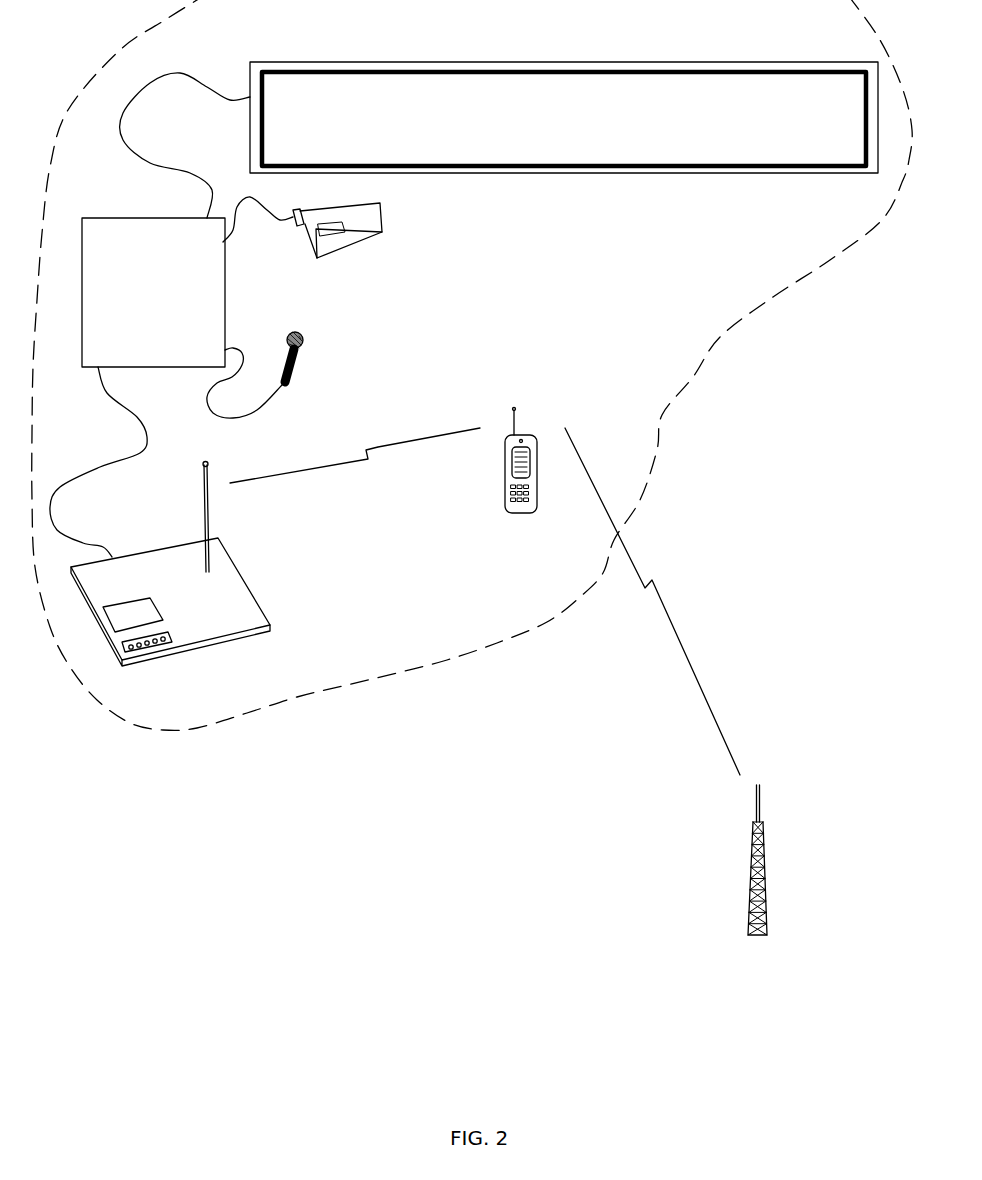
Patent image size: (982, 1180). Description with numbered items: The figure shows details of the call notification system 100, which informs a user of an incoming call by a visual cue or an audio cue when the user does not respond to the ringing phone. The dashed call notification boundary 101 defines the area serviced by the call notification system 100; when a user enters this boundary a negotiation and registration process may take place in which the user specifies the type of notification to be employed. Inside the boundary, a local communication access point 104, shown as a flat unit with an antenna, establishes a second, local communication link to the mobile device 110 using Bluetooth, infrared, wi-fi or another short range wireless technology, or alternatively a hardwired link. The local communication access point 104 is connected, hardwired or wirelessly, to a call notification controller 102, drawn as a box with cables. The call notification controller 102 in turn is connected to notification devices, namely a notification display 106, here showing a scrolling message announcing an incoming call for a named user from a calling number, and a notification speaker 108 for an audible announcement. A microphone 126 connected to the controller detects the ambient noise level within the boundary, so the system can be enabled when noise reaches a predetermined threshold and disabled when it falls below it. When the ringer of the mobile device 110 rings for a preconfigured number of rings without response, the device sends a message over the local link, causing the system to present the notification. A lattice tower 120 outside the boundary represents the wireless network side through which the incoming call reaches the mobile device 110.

The call notification system 100 is at (391, 649).
The call notification boundary 101 is at (712, 352).
The call notification controller 102 is at (131, 218).
The local communication access point 104 is at (242, 578).
The notification display 106 is at (547, 173).
The notification speaker 108 is at (338, 250).
The mobile device 110 is at (505, 505).
The cellular tower 120 is at (748, 910).
The microphone 126 is at (293, 375).